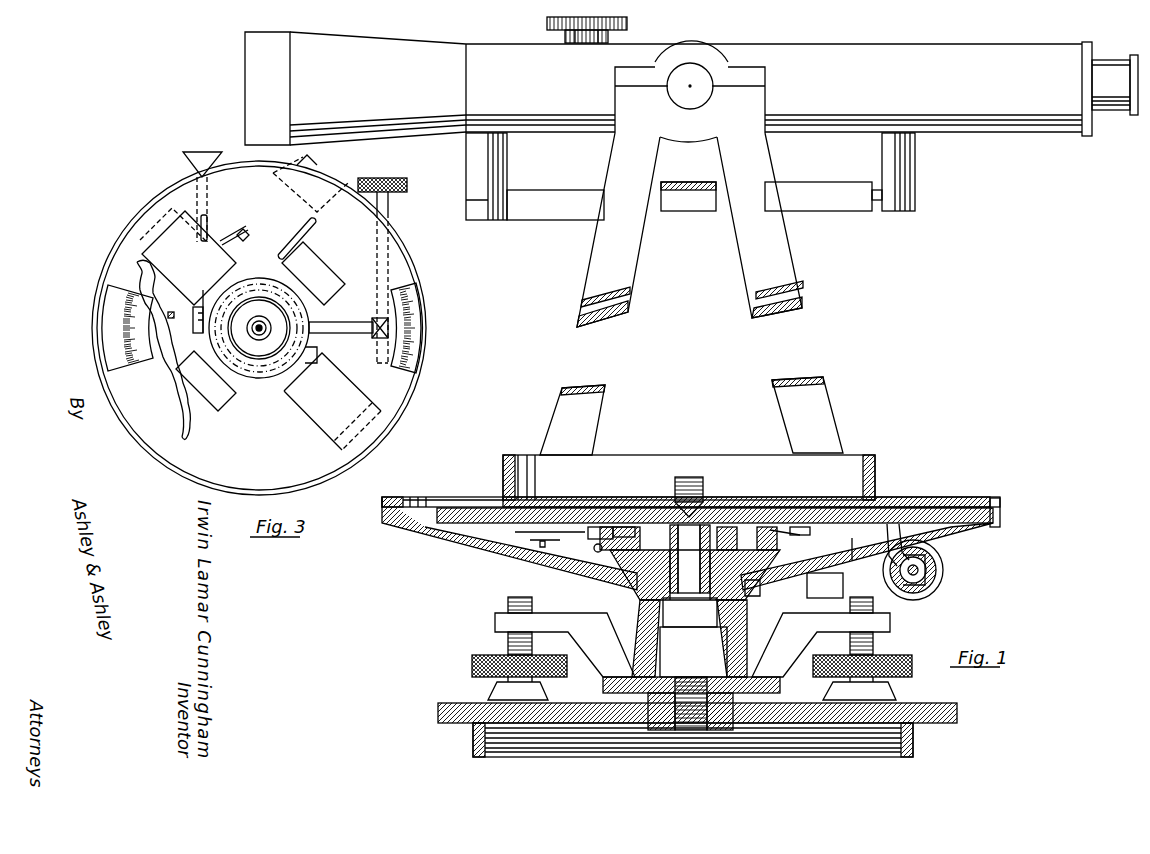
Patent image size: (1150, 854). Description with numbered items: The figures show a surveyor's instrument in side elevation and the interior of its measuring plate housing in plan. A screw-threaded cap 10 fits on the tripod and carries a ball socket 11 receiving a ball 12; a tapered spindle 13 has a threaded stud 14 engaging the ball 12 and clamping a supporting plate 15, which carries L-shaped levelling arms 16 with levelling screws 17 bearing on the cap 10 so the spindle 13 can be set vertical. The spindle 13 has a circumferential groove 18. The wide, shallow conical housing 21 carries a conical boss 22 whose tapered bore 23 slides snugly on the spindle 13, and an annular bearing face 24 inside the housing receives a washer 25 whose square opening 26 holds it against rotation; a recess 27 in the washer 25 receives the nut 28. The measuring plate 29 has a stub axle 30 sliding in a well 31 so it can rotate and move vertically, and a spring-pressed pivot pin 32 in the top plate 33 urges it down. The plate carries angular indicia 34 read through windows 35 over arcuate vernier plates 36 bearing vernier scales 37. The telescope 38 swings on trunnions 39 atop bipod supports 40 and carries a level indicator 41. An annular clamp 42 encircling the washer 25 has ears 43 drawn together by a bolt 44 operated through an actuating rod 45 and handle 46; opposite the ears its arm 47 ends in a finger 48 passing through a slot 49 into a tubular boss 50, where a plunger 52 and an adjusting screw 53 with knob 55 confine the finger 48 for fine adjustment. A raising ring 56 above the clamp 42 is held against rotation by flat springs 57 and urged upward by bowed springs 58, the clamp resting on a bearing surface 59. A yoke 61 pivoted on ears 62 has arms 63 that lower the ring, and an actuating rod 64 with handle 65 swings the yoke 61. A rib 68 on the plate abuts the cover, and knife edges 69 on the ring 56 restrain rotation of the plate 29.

In FIG. 1, the cap 10 is at (913, 746).
In FIG. 1, the ball socket 11 is at (760, 702).
In FIG. 1, the ball 12 is at (660, 735).
In FIG. 1, the tapered spindle 13 is at (652, 586).
In FIG. 1, the screw-threaded stud 14 is at (690, 735).
In FIG. 1, the supporting plate 15 is at (603, 684).
In FIG. 1, the levelling arms 16 is at (510, 613).
In FIG. 1, the levelling screws 17 is at (510, 641).
In FIG. 1, the circumferential groove 18 is at (652, 604).
In FIG. 1, the measuring plate housing 21 is at (1000, 511).
In FIG. 1, the conical boss 22 is at (640, 645).
In FIG. 1, the tapered bore 23 is at (748, 648).
In FIG. 1, the annular bearing face 24 is at (808, 586).
In FIG. 1, the washer 25 is at (756, 525).
In FIG. 1, the square opening 26 is at (657, 520).
In FIG. 1, the central recess 27 is at (736, 525).
In FIG. 1, the nut 28 is at (716, 525).
In FIG. 1, the measuring plate 29 is at (890, 523).
In FIG. 3, the measuring plate 29 is at (157, 375).
In FIG. 1, the stub axle 30 is at (693, 601).
In FIG. 1, the well 31 is at (755, 592).
In FIG. 1, the spring-pressed pivot pin 32 is at (684, 480).
In FIG. 1, the top plate 33 is at (806, 505).
In FIG. 3, the angular measuring indicia 34 is at (146, 411).
In FIG. 1, the windows 35 is at (447, 482).
In FIG. 1, the vernier scales 36 is at (415, 530).
In FIG. 3, the vernier scales 36 is at (98, 323).
In FIG. 3, the vernier scales 37 is at (100, 352).
In FIG. 1, the observing telescope 38 is at (958, 46).
In FIG. 1, the trunnions 39 is at (692, 72).
In FIG. 1, the bipod supports 40 is at (627, 303).
In FIG. 1, the level indicator 41 is at (822, 192).
In FIG. 1, the annular clamp 42 is at (776, 520).
In FIG. 3, the annular clamp 42 is at (295, 302).
In FIG. 1, the ears 43 is at (592, 530).
In FIG. 1, the bolt 44 is at (582, 548).
In FIG. 3, the actuating rod 45 is at (207, 233).
In FIG. 3, the handle 46 is at (190, 152).
In FIG. 1, the arm 47 is at (855, 565).
In FIG. 3, the arm 47 is at (340, 335).
In FIG. 1, the finger 48 is at (930, 566).
In FIG. 3, the slot 49 is at (378, 350).
In FIG. 1, the tubular boss 50 is at (926, 593).
In FIG. 1, the plunger 52 is at (940, 573).
In FIG. 3, the adjusting screw 53 is at (389, 207).
In FIG. 3, the knob 55 is at (394, 180).
In FIG. 1, the raising ring 56 is at (830, 520).
In FIG. 3, the raising ring 56 is at (262, 390).
In FIG. 1, the springs 57 is at (505, 545).
In FIG. 3, the springs 57 is at (308, 402).
In FIG. 1, the springs 58 is at (790, 536).
In FIG. 3, the springs 58 is at (303, 257).
In FIG. 1, the annular bearing surface 59 is at (615, 560).
In FIG. 1, the yoke 61 is at (548, 543).
In FIG. 3, the yoke 61 is at (222, 243).
In FIG. 1, the ears 62 is at (522, 545).
In FIG. 3, the ears 62 is at (248, 232).
In FIG. 3, the arms 63 is at (188, 322).
In FIG. 3, the actuating rod 64 is at (286, 247).
In FIG. 1, the handle 65 is at (816, 604).
In FIG. 1, the rib 68 is at (496, 498).
In FIG. 1, the knife edges 69 is at (622, 525).
In FIG. 3, the knife edges 69 is at (308, 358).